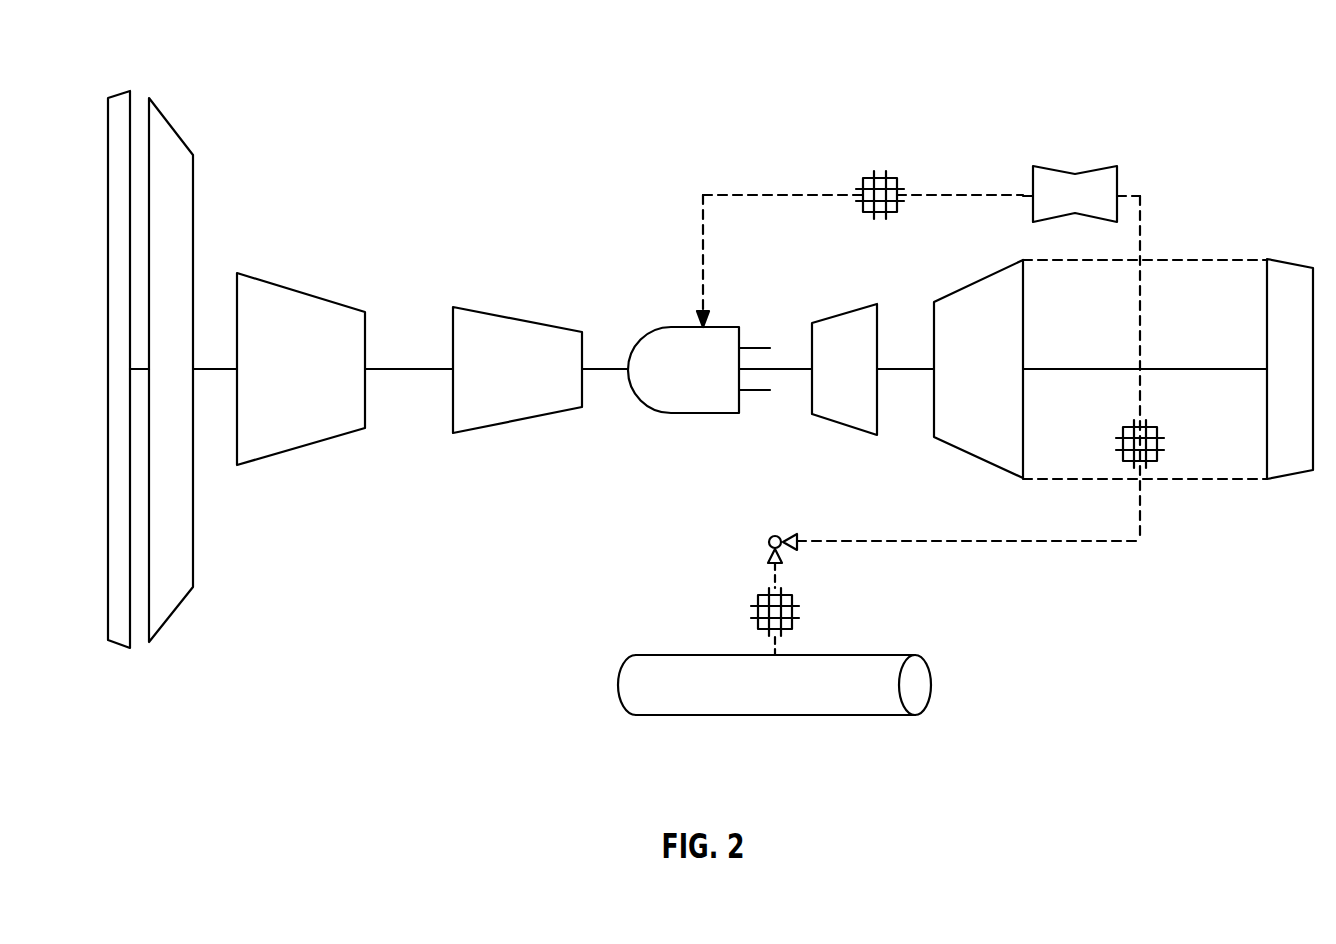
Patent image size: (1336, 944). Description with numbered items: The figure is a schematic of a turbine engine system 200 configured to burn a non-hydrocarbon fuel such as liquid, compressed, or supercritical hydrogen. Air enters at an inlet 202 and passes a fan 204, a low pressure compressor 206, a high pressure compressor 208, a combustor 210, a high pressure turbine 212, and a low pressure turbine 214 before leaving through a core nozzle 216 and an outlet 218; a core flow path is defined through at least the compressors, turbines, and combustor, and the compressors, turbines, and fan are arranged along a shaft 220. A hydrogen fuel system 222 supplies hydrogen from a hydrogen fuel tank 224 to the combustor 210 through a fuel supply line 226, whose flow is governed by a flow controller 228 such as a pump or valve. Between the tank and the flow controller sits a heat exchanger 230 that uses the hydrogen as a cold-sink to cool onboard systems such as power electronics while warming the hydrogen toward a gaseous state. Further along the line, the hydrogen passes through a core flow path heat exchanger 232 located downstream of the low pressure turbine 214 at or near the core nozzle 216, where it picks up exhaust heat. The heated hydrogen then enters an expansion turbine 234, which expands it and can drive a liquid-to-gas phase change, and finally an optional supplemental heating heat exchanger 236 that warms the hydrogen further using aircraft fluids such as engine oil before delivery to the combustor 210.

The turbine engine system 200 is at (1216, 86).
The inlet 202 is at (120, 105).
The fan 204 is at (166, 147).
The low pressure compressor 206 is at (285, 300).
The high pressure compressor 208 is at (505, 336).
The combustor 210 is at (710, 355).
The high pressure turbine 212 is at (848, 336).
The low pressure turbine 214 is at (982, 295).
The core nozzle 216 is at (1247, 482).
The outlet 218 is at (1280, 275).
The shaft 220 is at (387, 367).
The hydrogen fuel system 222 is at (893, 590).
The hydrogen fuel tank 224 is at (855, 698).
The fuel supply line 226 is at (898, 540).
The flow controller 228 is at (769, 541).
The heat exchanger 230 is at (794, 613).
The core flow path heat exchanger 232 is at (1148, 461).
The expansion turbine 234 is at (1098, 167).
The supplemental heating heat exchanger 236 is at (880, 178).